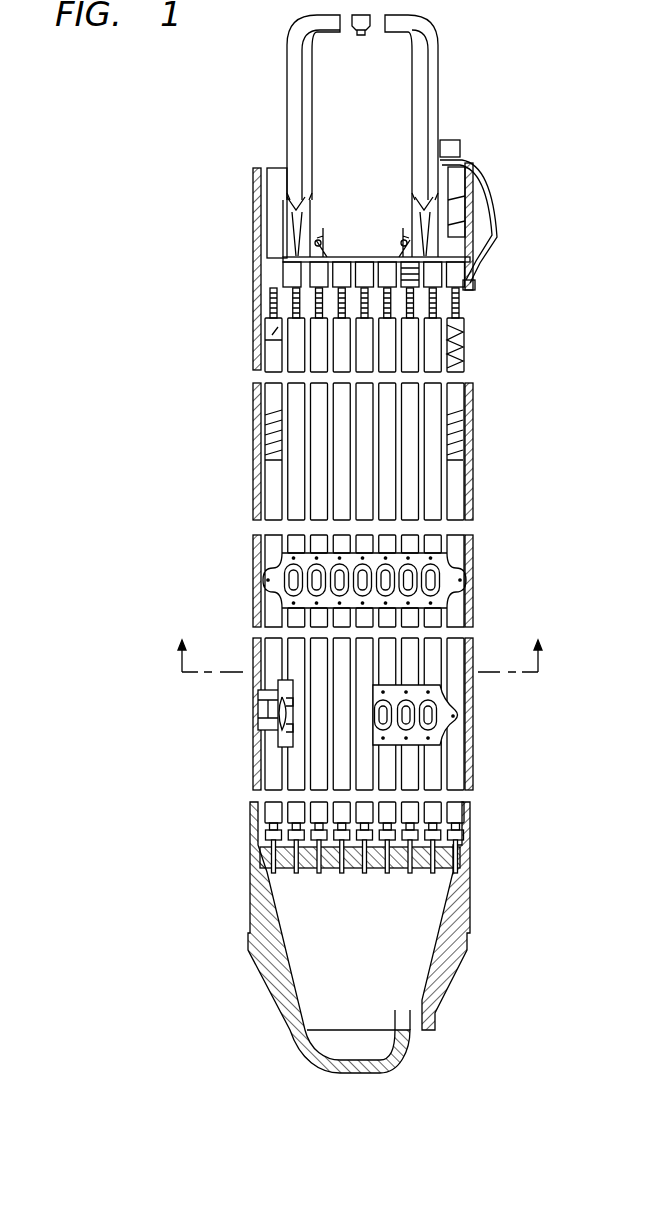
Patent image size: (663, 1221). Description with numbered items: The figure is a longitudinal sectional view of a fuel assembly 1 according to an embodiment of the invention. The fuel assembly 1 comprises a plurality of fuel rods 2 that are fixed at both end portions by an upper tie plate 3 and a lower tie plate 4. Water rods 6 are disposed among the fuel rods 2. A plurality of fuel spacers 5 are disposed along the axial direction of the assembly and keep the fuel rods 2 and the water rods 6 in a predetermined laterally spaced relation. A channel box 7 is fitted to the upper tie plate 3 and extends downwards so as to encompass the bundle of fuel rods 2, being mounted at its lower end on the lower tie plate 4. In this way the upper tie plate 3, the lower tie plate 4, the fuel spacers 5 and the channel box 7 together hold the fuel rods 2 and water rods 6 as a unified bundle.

The fuel assembly 1 is at (541, 562).
The fuel rod 2 is at (457, 388).
The upper tie plate 3 is at (290, 272).
The lower tie plate 4 is at (458, 858).
The fuel spacer 5 is at (263, 588).
The water rod 6 is at (363, 495).
The channel box 7 is at (253, 428).